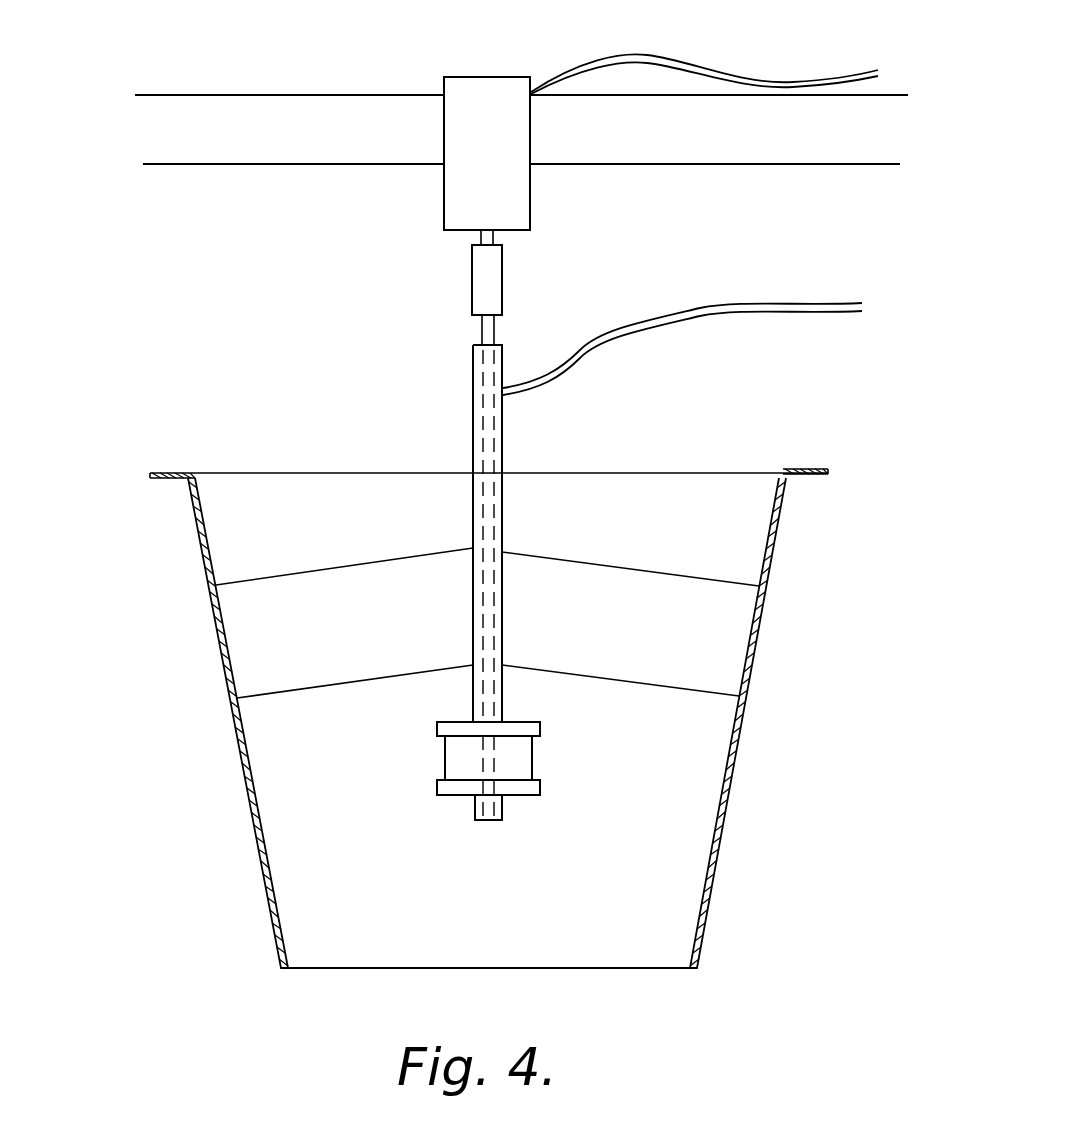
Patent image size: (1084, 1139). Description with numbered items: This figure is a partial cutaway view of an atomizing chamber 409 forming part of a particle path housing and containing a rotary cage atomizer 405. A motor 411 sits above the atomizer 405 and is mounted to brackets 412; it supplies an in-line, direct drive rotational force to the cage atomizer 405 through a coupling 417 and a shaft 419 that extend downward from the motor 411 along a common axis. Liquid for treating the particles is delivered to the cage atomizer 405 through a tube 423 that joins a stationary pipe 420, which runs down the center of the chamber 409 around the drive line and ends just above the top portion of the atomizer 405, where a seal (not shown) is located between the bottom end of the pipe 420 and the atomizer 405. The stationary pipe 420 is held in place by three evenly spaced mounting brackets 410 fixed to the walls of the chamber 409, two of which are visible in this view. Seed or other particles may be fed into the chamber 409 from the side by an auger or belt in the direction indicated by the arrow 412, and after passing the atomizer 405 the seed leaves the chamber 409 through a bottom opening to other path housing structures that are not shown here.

The cage atomizer 405 is at (515, 800).
The atomizing chamber 409 is at (728, 817).
The mounting brackets 410 is at (683, 637).
The motor 411 is at (497, 88).
The brackets 412 is at (305, 146).
The coupling 417 is at (492, 271).
The shaft 419 is at (482, 332).
The stationary pipe 420 is at (503, 428).
The tube 423 is at (748, 308).